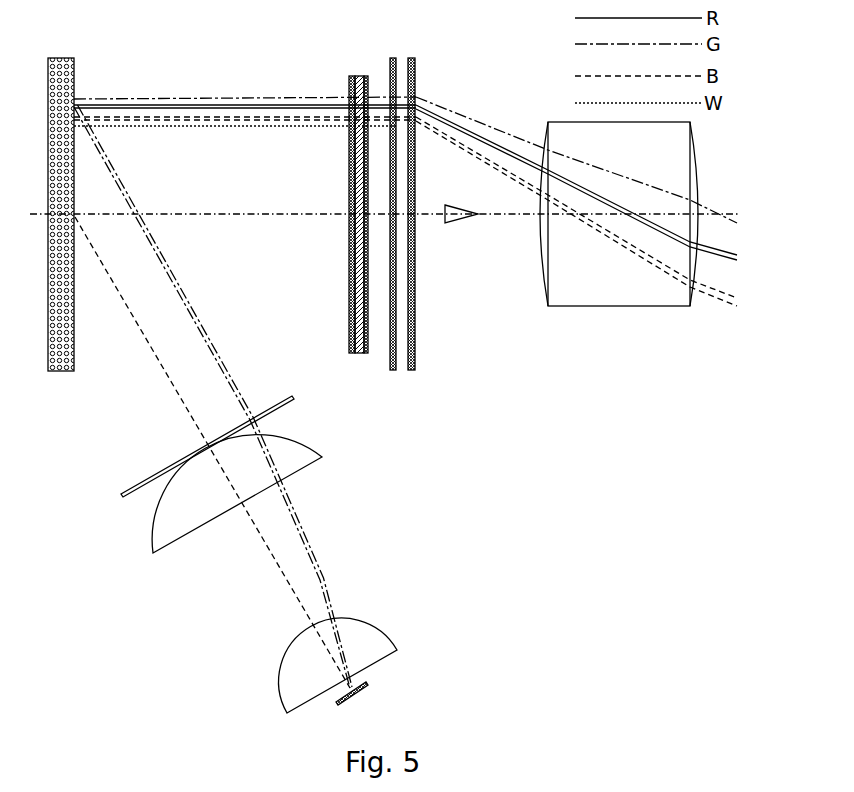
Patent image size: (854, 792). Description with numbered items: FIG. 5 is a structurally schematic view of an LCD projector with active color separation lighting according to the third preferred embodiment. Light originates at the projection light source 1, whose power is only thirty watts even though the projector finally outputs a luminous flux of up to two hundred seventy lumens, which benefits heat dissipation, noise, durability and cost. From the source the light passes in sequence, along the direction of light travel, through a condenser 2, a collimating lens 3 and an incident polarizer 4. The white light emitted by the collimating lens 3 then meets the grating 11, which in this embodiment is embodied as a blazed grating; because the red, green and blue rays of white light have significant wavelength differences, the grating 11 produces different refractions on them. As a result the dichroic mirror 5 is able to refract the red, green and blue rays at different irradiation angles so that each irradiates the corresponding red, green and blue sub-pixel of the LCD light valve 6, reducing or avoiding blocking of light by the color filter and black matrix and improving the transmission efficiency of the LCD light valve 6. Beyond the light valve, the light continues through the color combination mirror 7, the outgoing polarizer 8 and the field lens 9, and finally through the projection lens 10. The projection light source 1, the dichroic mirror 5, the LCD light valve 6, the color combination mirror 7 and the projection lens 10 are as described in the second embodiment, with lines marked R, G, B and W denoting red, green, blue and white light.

The projection light source 1 is at (368, 686).
The condenser 2 is at (363, 627).
The collimating lens 3 is at (323, 459).
The incident polarizer 4 is at (126, 491).
The dichroic mirror 5 is at (352, 77).
The LCD light valve 6 is at (360, 77).
The color combination mirror 7 is at (367, 77).
The outgoing polarizer 8 is at (394, 370).
The field lens 9 is at (417, 358).
The projection lens 10 is at (578, 304).
The grating 11 is at (76, 72).